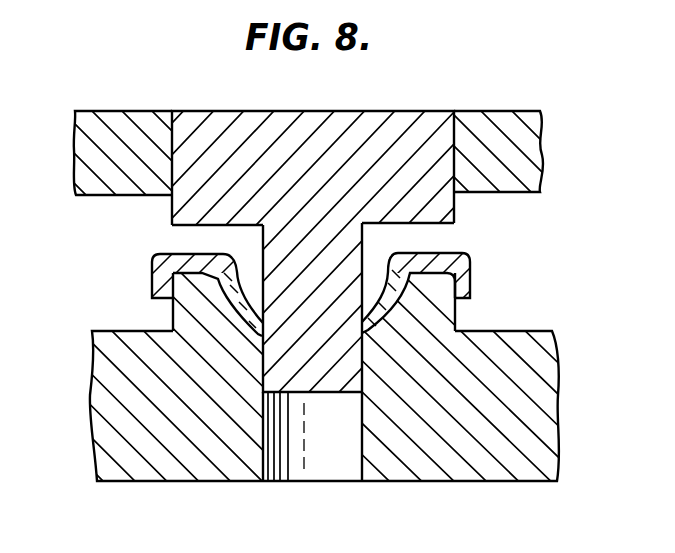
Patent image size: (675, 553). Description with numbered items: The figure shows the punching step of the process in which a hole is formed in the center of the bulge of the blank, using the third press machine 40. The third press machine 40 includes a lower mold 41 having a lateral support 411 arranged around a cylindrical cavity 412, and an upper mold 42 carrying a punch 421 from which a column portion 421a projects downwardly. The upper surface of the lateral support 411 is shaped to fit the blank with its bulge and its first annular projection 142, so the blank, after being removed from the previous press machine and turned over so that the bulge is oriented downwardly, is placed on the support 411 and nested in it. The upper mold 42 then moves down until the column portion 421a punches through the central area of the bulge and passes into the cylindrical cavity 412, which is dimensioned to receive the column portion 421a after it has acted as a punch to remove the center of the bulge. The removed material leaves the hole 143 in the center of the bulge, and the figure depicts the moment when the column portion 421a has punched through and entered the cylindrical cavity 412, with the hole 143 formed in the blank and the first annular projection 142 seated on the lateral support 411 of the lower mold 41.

The third press machine 40 is at (562, 269).
The lower mold 41 is at (555, 343).
The lateral support 411 is at (445, 320).
The cylindrical cavity 412 is at (361, 453).
The upper mold 42 is at (507, 118).
The punch 421 is at (392, 118).
The column portion 421a is at (345, 242).
The first annular projection 142 is at (470, 272).
The hole 143 is at (362, 330).